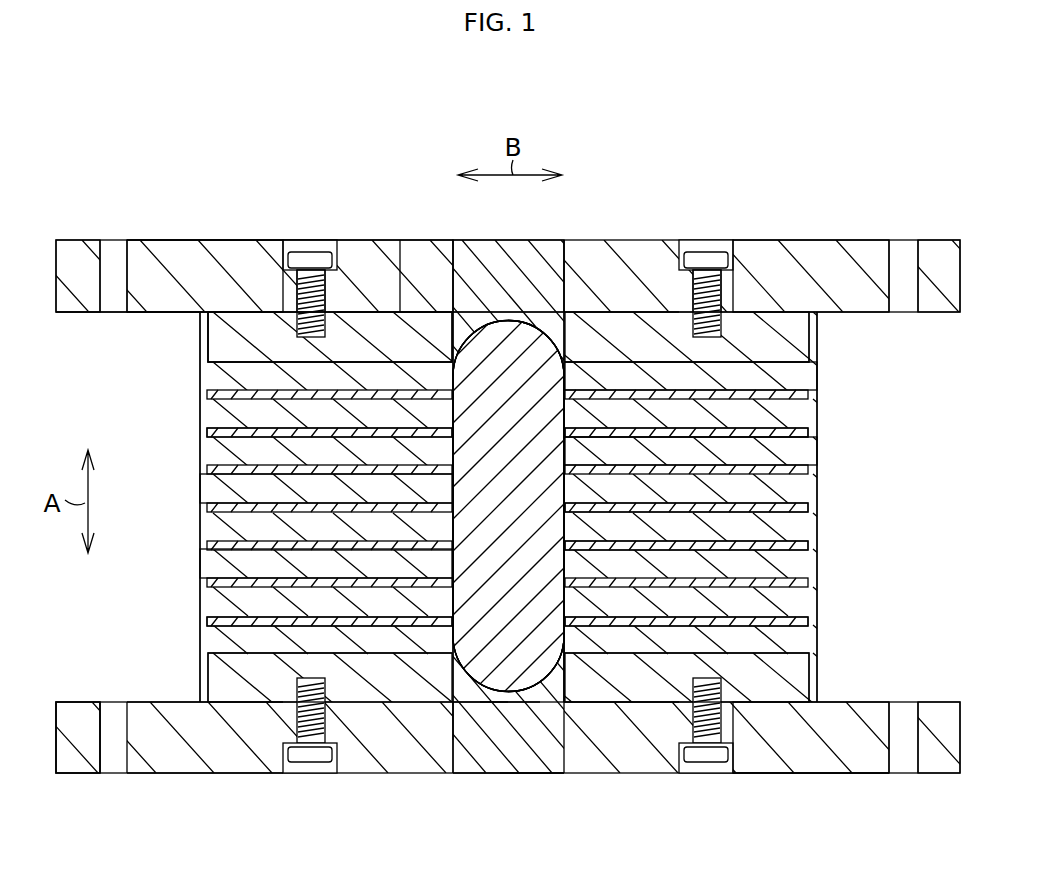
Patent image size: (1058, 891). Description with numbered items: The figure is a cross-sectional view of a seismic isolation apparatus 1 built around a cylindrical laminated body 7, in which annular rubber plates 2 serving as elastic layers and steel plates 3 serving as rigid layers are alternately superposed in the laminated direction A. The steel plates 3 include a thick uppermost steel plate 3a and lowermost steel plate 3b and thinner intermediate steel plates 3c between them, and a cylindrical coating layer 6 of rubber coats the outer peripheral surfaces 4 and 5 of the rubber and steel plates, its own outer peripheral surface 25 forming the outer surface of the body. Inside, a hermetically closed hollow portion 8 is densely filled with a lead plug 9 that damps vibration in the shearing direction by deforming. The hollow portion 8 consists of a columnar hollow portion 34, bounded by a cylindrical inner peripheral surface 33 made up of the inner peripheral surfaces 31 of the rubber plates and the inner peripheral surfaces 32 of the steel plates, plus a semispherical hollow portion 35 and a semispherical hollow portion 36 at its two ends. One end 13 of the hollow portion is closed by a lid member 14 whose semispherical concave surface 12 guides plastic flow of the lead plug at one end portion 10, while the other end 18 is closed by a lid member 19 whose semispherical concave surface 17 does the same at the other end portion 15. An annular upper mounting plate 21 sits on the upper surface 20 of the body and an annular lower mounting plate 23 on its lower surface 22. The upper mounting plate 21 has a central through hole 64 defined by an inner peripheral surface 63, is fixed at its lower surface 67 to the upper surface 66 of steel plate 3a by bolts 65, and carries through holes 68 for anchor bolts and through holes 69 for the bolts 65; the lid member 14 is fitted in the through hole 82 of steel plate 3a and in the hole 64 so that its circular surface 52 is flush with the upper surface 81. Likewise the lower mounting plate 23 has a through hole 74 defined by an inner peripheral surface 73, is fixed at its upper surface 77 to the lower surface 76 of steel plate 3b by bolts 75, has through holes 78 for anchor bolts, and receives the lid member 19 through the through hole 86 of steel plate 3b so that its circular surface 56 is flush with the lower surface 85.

The seismic isolation apparatus 1 is at (110, 628).
The annular rubber plates 2 is at (210, 560).
The steel plates 3 is at (205, 335).
The uppermost annular steel plate 3a is at (253, 348).
The lowermost annular steel plate 3b is at (800, 678).
The annular steel plates 3c is at (215, 432).
The annular outer peripheral surfaces 4 is at (808, 450).
The annular outer peripheral surfaces 5 is at (815, 338).
The cylindrical coating layer 6 is at (210, 487).
The cylindrical laminated body 7 is at (176, 524).
The hollow portion 8 is at (500, 730).
The lead plug 9 is at (560, 350).
The one end portion of the hollow portion 10 is at (440, 308).
The semispherical concave surface 12 is at (560, 320).
The one end of the hollow portion 13 is at (530, 400).
The lid member 14 is at (488, 340).
The other end portion of the hollow portion 15 is at (532, 680).
The semispherical concave surface 17 is at (502, 760).
The other end of the hollow portion 18 is at (567, 680).
The lid member 19 is at (470, 760).
The annular upper surface 20 is at (264, 300).
The annular upper mounting plate 21 is at (165, 275).
The annular lower surface 22 is at (790, 705).
The annular lower mounting plate 23 is at (865, 740).
The cylindrical outer peripheral surface 25 is at (818, 405).
The annular inner peripheral surfaces 31 is at (587, 680).
The annular inner peripheral surfaces 32 is at (443, 680).
The cylindrical inner peripheral surface 33 is at (590, 300).
The columnar hollow portion 34 is at (460, 740).
The semispherical hollow portion 35 is at (570, 310).
The semispherical hollow portion 36 is at (572, 680).
The circular surface 52 is at (495, 265).
The circular surface 56 is at (522, 773).
The cylindrical inner peripheral surface 63 is at (455, 330).
The circular through hole 64 is at (555, 345).
The bolts 65 is at (320, 262).
The upper surface 66 is at (775, 300).
The lower surface 67 is at (150, 312).
The through holes 68 is at (111, 262).
The through holes 69 is at (306, 300).
The inner peripheral surface 73 is at (457, 733).
The through hole 74 is at (479, 757).
The bolts 75 is at (310, 735).
The lower surface 76 is at (250, 703).
The upper surface 77 is at (78, 702).
The through holes 78 is at (110, 750).
The annular upper surface 81 is at (230, 262).
The circular through hole 82 is at (386, 300).
The annular lower surface 85 is at (225, 773).
The circular through hole 86 is at (555, 687).